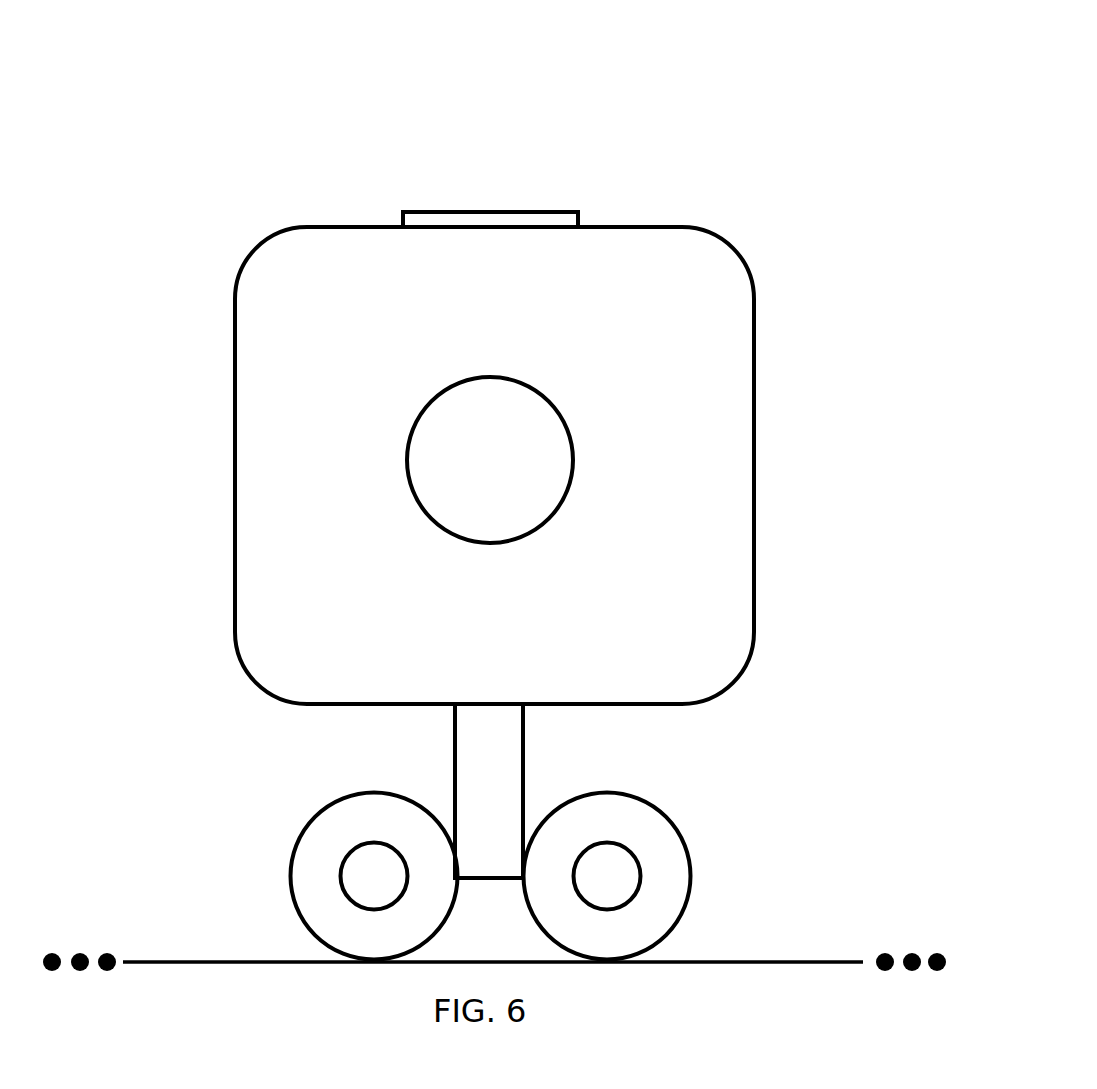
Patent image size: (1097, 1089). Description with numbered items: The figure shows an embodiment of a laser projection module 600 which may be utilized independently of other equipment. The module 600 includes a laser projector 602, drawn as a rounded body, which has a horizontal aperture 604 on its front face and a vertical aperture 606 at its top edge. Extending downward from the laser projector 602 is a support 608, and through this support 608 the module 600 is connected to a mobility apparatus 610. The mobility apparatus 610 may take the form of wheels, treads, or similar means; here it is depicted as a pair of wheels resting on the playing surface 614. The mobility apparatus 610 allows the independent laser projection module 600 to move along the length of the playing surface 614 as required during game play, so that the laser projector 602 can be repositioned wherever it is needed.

The laser projection module 600 is at (802, 168).
The laser projector 602 is at (738, 345).
The horizontal aperture 604 is at (440, 453).
The vertical aperture 606 is at (508, 218).
The support 608 is at (463, 778).
The mobility apparatus 610 is at (623, 858).
The playing surface 614 is at (162, 963).